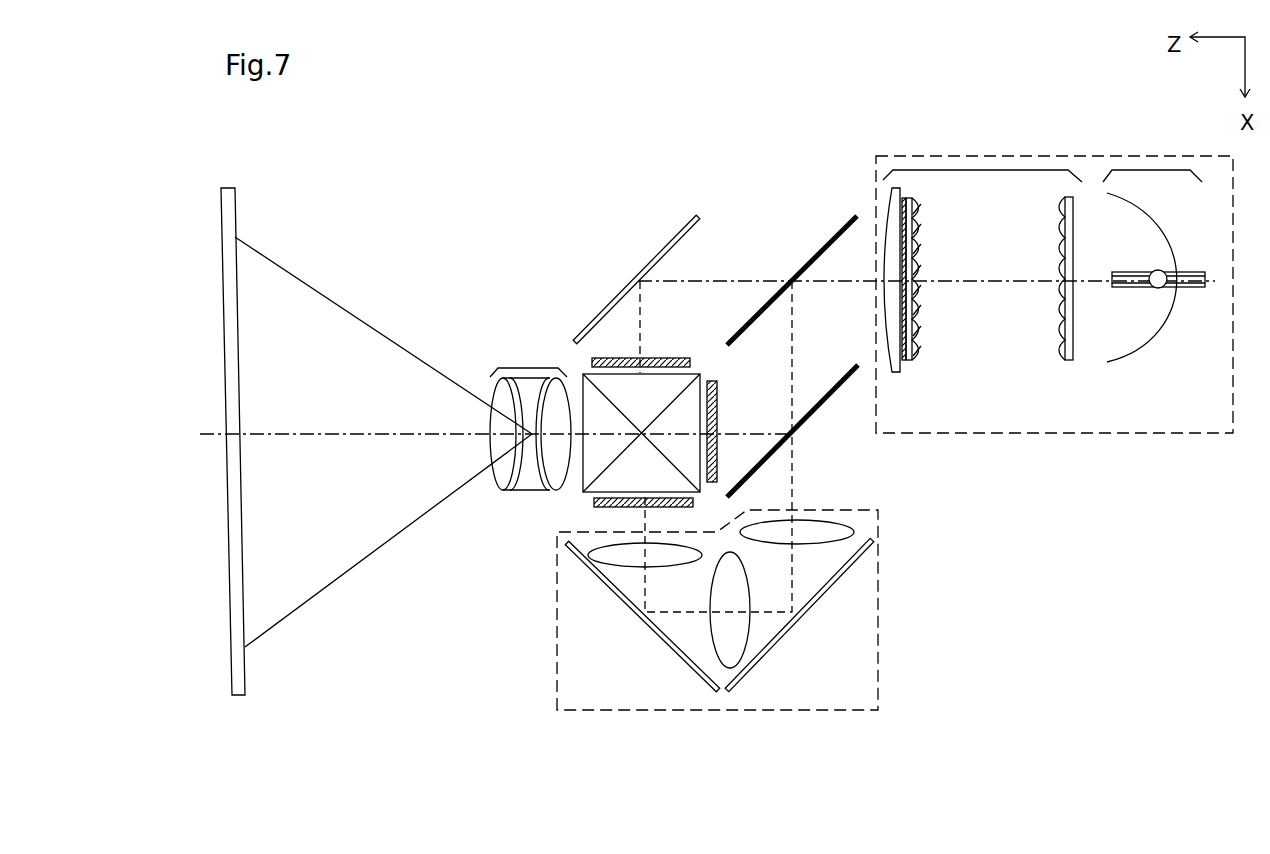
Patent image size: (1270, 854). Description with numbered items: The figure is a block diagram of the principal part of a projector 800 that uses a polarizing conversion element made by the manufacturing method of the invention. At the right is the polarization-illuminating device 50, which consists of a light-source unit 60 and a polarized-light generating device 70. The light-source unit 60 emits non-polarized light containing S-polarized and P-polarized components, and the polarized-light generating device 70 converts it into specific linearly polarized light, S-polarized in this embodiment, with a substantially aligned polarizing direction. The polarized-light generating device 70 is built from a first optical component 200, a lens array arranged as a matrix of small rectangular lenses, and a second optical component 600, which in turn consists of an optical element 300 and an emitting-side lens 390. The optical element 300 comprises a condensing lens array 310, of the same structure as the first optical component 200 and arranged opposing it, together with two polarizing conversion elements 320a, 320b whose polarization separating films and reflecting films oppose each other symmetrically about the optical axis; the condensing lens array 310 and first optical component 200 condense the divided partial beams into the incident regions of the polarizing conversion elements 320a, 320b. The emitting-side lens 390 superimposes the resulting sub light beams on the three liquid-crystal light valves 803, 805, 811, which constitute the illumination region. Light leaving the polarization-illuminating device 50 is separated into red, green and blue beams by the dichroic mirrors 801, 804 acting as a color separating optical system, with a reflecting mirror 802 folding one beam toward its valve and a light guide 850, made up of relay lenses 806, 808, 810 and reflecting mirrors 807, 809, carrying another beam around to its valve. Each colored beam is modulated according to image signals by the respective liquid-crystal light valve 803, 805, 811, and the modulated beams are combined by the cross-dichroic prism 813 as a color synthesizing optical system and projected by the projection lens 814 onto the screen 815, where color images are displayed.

The projector 800 is at (376, 101).
The screen 815 is at (245, 667).
The projection lens 814 is at (517, 367).
The cross-dichroic prism 813 is at (593, 473).
The liquid-crystal light valve 811 is at (593, 502).
The liquid-crystal light valve 803 is at (650, 357).
The liquid-crystal light valve 805 is at (710, 380).
The reflecting mirror 802 is at (650, 257).
The dichroic mirror 801 is at (808, 258).
The dichroic mirror 804 is at (825, 393).
The relay lens 806 is at (860, 524).
The reflecting mirror 807 is at (858, 562).
The relay lens 808 is at (735, 593).
The reflecting mirror 809 is at (665, 643).
The relay lens 810 is at (670, 558).
The light guide 850 is at (880, 642).
The polarization-illuminating device 50 is at (1162, 433).
The light-source unit 60 is at (1140, 168).
The polarized-light generating device 70 is at (982, 168).
The emitting-side lens 390 is at (897, 373).
The polarizing conversion element 320a is at (907, 362).
The polarizing conversion element 320b is at (907, 200).
The condensing lens array 310 is at (918, 362).
The optical element 300 is at (962, 325).
The first optical component 200 is at (1070, 362).
The second optical component 600 is at (953, 349).